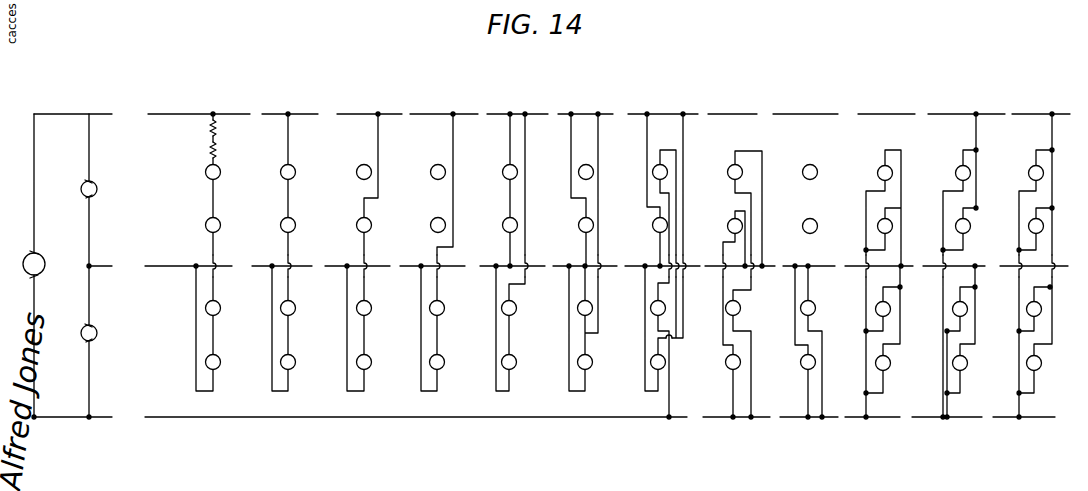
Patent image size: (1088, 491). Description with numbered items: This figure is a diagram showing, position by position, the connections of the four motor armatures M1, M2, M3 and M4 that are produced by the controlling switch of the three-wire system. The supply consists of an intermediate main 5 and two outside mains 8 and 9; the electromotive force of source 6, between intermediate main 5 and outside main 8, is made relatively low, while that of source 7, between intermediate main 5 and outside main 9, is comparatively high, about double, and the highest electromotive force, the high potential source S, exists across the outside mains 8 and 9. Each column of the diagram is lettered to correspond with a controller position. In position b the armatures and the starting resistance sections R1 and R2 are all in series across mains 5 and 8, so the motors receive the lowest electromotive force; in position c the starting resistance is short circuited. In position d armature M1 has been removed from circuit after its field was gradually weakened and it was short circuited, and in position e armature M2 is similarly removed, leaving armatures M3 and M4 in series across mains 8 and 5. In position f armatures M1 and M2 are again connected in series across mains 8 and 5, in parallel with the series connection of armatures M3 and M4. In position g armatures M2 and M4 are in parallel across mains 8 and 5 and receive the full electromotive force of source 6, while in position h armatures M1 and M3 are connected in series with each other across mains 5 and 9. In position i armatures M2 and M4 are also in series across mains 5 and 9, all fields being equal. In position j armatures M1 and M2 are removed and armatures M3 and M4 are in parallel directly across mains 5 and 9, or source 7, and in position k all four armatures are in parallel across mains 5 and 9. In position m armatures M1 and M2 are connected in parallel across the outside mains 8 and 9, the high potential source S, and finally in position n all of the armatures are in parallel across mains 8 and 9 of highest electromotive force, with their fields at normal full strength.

The intermediate main 5 is at (577, 258).
The source of low electromotive force 6 is at (93, 185).
The source of high electromotive force 7 is at (93, 329).
The outside main 8 is at (552, 106).
The outside main 9 is at (543, 409).
The high potential source S is at (28, 257).
The starting resistance section R1 is at (201, 128).
The starting resistance section R2 is at (201, 150).
The motor armature M1 is at (200, 175).
The motor armature M2 is at (199, 228).
The motor armature M3 is at (195, 308).
The motor armature M4 is at (194, 363).
The controller position b is at (194, 240).
The controller position c is at (283, 240).
The controller position d is at (362, 240).
The controller position e is at (437, 240).
The controller position f is at (511, 240).
The controller position g is at (584, 241).
The controller position h is at (664, 254).
The controller position i is at (743, 254).
The controller position j is at (808, 255).
The controller position k is at (883, 254).
The controller position m is at (959, 254).
The controller position n is at (1036, 254).